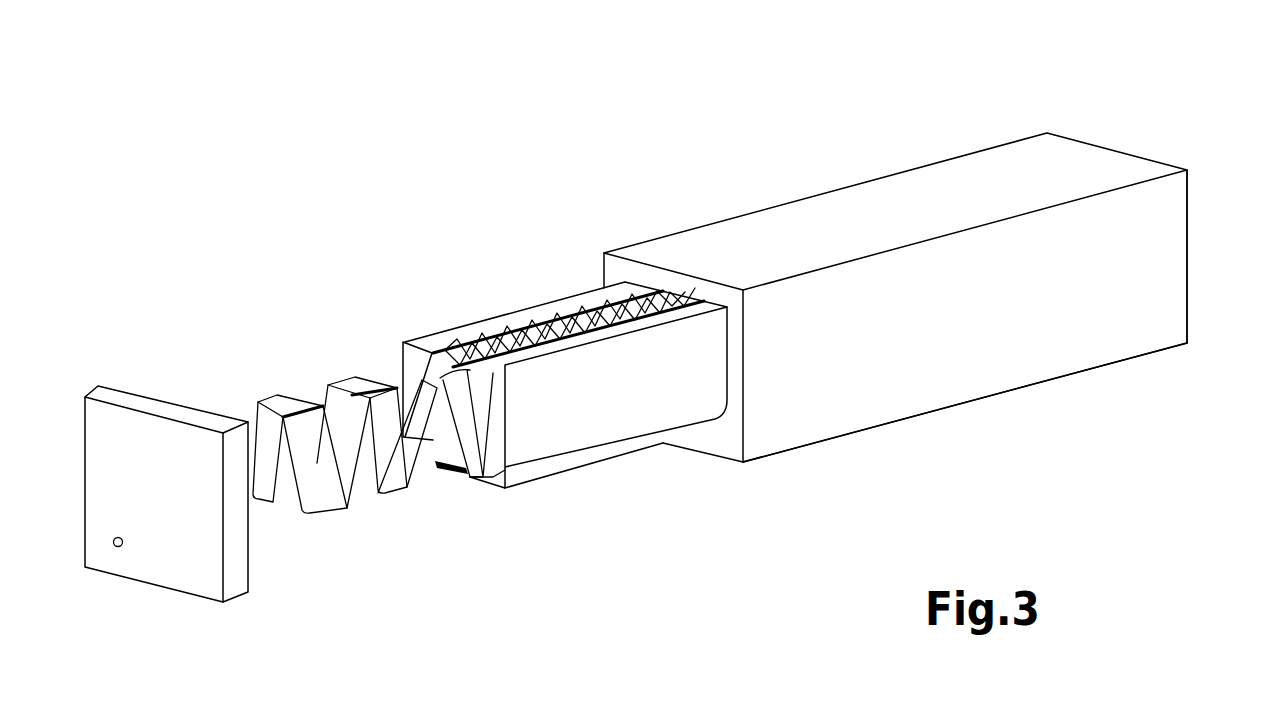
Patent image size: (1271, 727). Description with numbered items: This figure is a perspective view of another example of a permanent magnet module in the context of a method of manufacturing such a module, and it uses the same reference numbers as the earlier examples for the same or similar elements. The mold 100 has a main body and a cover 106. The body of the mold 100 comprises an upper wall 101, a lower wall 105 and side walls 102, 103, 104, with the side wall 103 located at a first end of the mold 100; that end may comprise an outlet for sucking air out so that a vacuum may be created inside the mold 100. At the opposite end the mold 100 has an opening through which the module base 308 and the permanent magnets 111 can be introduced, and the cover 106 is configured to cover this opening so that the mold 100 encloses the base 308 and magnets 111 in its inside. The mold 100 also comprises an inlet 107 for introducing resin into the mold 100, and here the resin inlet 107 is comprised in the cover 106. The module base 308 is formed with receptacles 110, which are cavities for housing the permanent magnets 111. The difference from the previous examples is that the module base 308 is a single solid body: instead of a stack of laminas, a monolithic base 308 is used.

The mold 100 is at (920, 262).
The upper wall 101 is at (869, 146).
The side wall 102 is at (920, 262).
The side wall 103 is at (1206, 253).
The side wall 104 is at (1130, 330).
The lower wall 105 is at (960, 427).
The cover 106 is at (158, 474).
The inlet 107 is at (117, 551).
The receptacles 110 is at (433, 384).
The permanent magnets 111 is at (352, 385).
The module base 308 is at (629, 475).